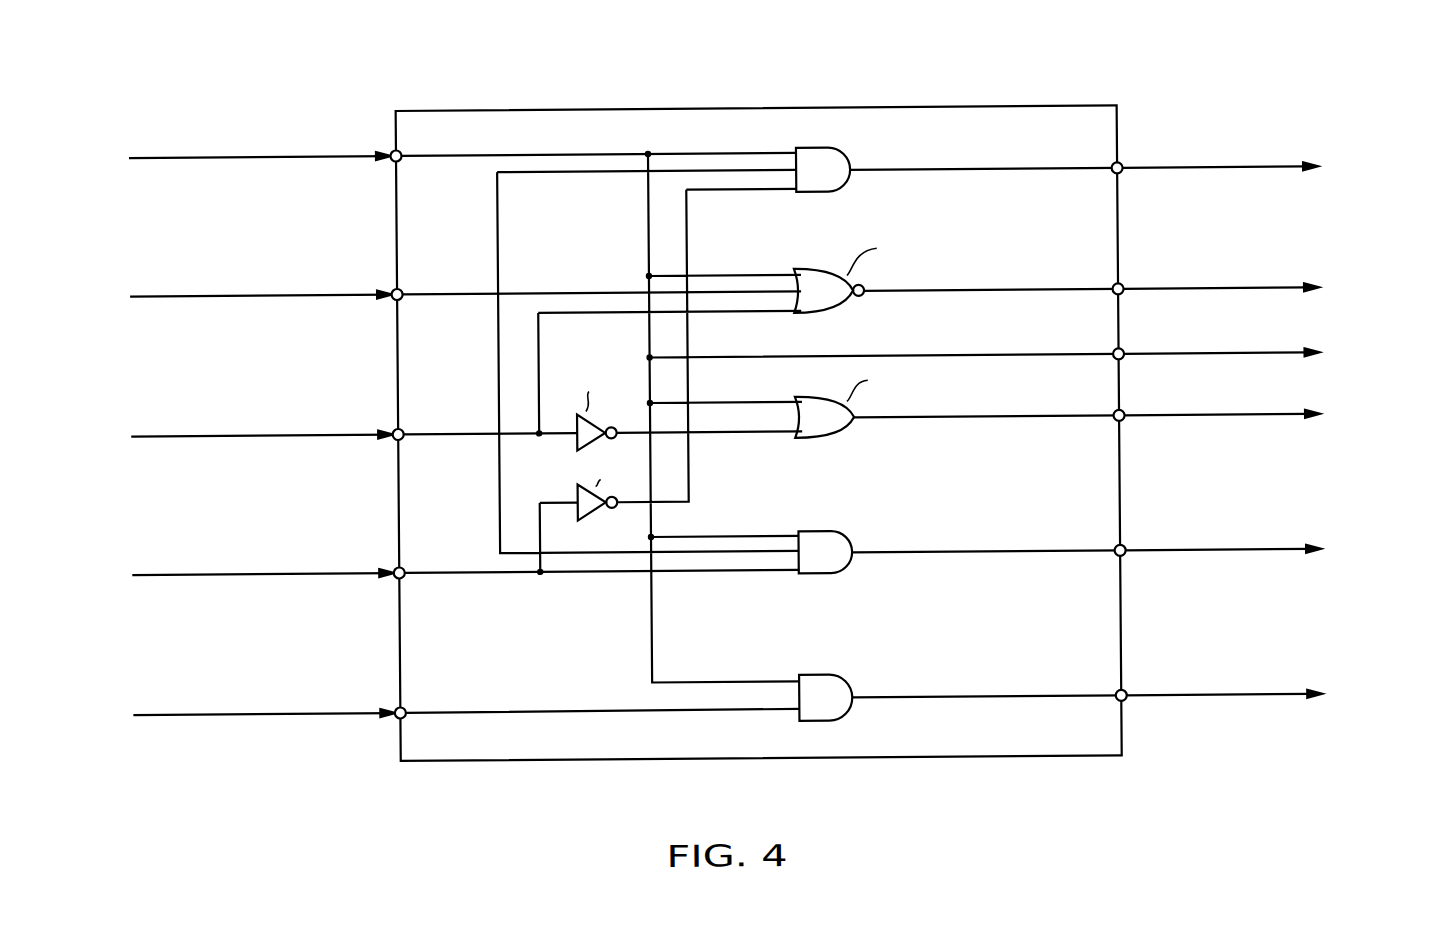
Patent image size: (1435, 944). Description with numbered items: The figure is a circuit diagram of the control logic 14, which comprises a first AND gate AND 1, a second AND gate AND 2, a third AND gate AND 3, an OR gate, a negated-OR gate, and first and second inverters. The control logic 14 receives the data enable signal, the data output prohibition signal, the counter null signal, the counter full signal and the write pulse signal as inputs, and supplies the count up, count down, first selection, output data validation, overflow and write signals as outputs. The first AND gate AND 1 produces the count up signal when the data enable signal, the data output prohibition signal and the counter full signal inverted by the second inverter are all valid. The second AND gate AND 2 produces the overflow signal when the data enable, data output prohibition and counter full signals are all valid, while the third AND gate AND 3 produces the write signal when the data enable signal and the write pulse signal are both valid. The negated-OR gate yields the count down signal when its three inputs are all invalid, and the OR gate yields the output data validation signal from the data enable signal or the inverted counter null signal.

The control logic 14 is at (775, 440).
The first AND gate 1 is at (848, 157).
The second AND gate 2 is at (846, 539).
The third AND gate 3 is at (845, 682).